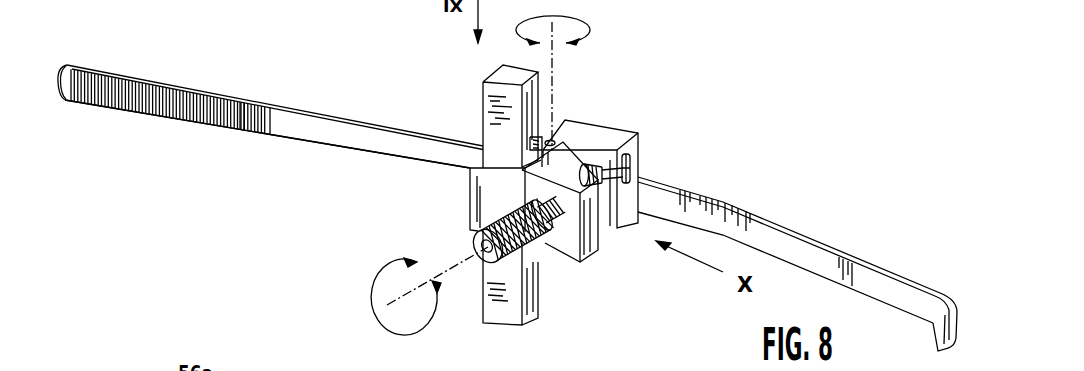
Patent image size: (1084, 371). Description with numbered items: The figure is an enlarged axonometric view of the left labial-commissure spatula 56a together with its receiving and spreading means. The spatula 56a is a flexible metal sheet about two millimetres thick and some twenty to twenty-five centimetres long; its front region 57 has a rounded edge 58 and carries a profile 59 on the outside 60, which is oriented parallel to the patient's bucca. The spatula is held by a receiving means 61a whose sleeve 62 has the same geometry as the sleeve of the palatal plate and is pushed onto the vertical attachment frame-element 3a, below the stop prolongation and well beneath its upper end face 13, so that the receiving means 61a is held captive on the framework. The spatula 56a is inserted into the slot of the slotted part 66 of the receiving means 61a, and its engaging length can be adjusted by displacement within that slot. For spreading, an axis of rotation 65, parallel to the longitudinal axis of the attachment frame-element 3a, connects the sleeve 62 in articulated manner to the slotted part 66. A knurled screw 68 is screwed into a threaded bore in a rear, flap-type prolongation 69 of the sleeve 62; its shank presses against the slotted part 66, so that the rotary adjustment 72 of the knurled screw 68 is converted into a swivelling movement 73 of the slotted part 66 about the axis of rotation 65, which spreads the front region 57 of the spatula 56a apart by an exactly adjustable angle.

The attachment frame-element 3a is at (534, 312).
The upper end face 13 is at (497, 78).
The labial-commissure spatula 56a is at (338, 111).
The front region 57 is at (195, 100).
The rounded edge 58 is at (63, 93).
The profile 59 is at (229, 128).
The outside 60 is at (347, 145).
The receiving means 61a is at (621, 121).
The sleeve 62 is at (478, 193).
The axis of rotation 65 is at (553, 90).
The slotted part 66 is at (636, 153).
The knurled screw 68 is at (473, 233).
The flap-type prolongation 69 is at (570, 253).
The rotary adjustment 72 is at (373, 266).
The swivelling movement 73 is at (590, 32).